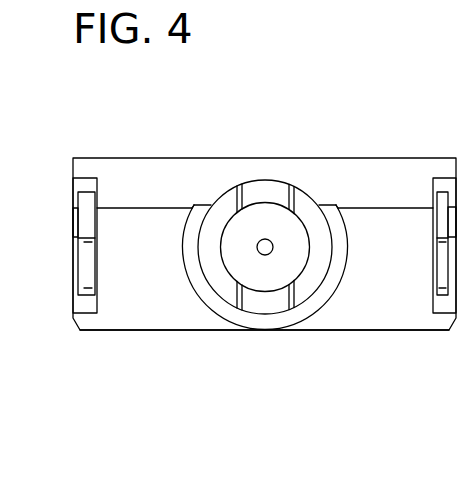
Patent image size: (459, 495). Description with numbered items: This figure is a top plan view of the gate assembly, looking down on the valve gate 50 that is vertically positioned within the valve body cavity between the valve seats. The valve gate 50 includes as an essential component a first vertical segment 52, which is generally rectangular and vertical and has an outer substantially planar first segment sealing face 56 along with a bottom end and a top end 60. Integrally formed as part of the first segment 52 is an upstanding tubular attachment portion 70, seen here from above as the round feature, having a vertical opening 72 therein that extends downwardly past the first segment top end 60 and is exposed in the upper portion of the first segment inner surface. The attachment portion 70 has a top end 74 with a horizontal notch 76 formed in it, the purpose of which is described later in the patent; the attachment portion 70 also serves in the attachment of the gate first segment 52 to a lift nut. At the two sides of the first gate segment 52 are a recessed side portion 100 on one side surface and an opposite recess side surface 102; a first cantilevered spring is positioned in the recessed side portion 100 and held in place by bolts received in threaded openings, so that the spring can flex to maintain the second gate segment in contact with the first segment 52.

The valve gate 50 is at (257, 116).
The first vertical segment 52 is at (452, 330).
The first segment sealing face 56 is at (400, 157).
The top end 60 is at (180, 320).
The tubular attachment portion 70 is at (220, 190).
The vertical opening 72 is at (303, 250).
The top end 74 is at (320, 252).
The horizontal notch 76 is at (277, 192).
The recessed side portion 100 is at (92, 278).
The recess side surface 102 is at (437, 278).